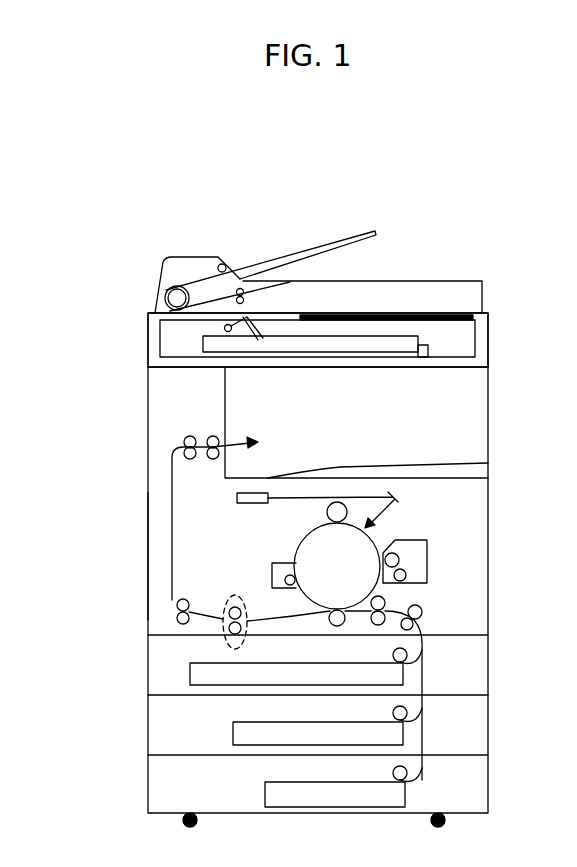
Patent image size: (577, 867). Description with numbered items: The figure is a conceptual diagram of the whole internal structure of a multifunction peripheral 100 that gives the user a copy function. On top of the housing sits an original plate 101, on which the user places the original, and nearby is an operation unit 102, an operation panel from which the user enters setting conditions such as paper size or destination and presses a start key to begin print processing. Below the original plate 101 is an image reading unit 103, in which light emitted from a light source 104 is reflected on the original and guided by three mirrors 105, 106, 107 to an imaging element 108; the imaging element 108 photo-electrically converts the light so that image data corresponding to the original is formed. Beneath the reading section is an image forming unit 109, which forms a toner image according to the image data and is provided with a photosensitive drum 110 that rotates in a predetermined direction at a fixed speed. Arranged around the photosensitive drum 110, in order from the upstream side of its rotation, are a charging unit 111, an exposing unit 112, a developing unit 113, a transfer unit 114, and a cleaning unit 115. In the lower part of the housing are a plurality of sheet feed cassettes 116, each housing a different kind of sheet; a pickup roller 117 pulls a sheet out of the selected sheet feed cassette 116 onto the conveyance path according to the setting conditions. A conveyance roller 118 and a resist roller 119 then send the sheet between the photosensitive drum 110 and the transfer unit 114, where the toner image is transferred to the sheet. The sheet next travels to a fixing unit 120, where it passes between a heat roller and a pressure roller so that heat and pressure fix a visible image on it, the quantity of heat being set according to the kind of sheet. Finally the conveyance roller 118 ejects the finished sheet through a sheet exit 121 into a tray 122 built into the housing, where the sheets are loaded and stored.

The multifunction peripheral 100 is at (318, 235).
The original plate 101 is at (388, 312).
The operation unit 102 is at (452, 316).
The image reading unit 103 is at (140, 364).
The light source 104 is at (273, 318).
The mirror 105 is at (250, 328).
The mirror 106 is at (203, 333).
The mirror 107 is at (197, 358).
The imaging element 108 is at (428, 347).
The image forming unit 109 is at (138, 620).
The photosensitive drum 110 is at (296, 550).
The charging unit 111 is at (327, 512).
The exposing unit 112 is at (237, 498).
The developing unit 113 is at (430, 583).
The transfer unit 114 is at (330, 615).
The cleaning unit 115 is at (272, 566).
The sheet feed cassette 116 is at (190, 683).
The pickup roller 117 is at (407, 655).
The conveyance roller 118 is at (178, 602).
The resist roller 119 is at (378, 626).
The fixing unit 120 is at (222, 629).
The sheet exit 121 is at (240, 462).
The tray 122 is at (305, 470).